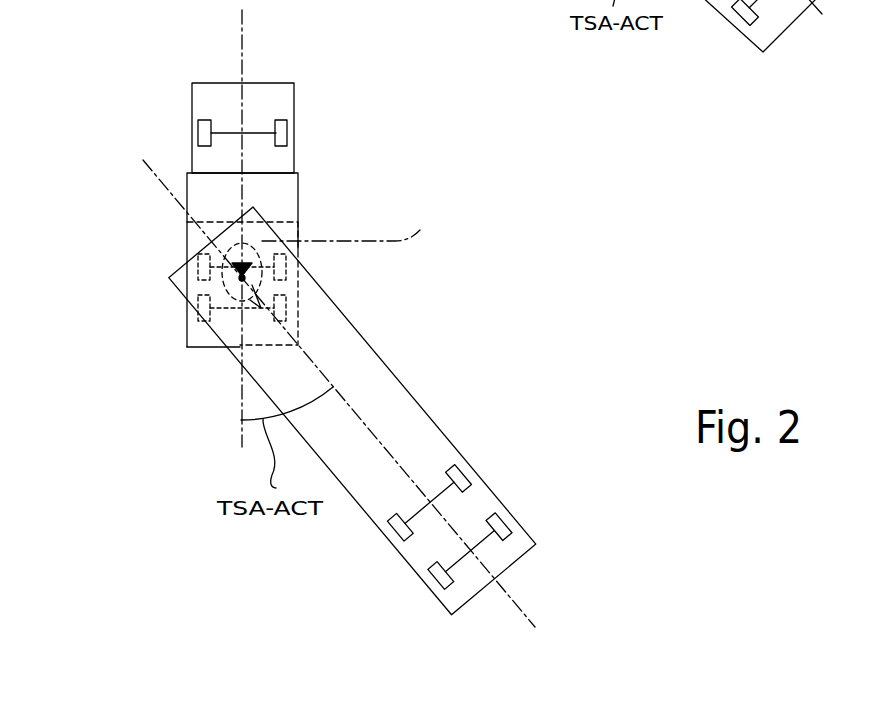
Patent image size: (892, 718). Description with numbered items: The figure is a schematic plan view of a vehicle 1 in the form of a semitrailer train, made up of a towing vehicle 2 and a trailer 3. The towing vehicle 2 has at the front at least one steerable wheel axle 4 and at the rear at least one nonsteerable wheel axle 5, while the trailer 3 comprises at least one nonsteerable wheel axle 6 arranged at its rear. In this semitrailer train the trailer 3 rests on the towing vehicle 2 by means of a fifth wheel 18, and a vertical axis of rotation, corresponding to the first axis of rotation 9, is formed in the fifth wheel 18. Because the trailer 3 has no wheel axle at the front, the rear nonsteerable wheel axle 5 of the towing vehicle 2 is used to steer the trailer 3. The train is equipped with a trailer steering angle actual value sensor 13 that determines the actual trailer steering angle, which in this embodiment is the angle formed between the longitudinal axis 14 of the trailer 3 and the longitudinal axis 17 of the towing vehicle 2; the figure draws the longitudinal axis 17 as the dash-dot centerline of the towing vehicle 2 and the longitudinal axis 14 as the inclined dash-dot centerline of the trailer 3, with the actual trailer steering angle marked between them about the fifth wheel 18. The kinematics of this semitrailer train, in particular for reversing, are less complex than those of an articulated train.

The vehicle 1 is at (302, 133).
The towing vehicle 2 is at (283, 203).
The trailer 3 is at (416, 424).
The steerable wheel axle 4 is at (229, 119).
The nonsteerable wheel axle 5 is at (184, 267).
The nonsteerable wheel axle 6 is at (475, 520).
The first axis of rotation 9 is at (350, 221).
The trailer steering angle actual value sensor 13 is at (200, 222).
The longitudinal axis of the trailer 14 is at (350, 398).
The longitudinal axis of the towing vehicle 17 is at (242, 52).
The fifth wheel 18 is at (230, 345).